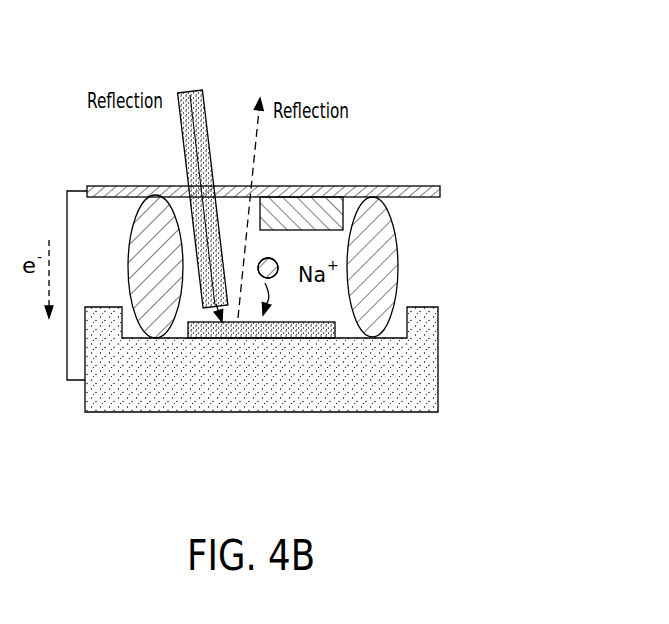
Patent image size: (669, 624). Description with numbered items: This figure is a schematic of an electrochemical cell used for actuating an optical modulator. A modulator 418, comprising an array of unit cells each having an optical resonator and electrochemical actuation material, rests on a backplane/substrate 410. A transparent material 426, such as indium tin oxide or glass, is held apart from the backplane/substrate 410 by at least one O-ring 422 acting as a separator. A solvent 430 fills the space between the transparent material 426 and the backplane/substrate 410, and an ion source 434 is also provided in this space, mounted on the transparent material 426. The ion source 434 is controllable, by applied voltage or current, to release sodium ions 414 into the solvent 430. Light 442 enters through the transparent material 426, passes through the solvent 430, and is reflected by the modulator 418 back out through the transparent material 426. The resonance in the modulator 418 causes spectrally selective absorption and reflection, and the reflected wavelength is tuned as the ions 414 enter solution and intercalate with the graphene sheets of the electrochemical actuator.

The backplane/substrate 410 is at (420, 414).
The ions 414 is at (275, 278).
The modulator 418 is at (345, 333).
The O-ring 422 is at (415, 297).
The transparent material 426 is at (440, 167).
The solvent 430 is at (336, 242).
The ion source 434 is at (339, 204).
The light 442 is at (187, 91).